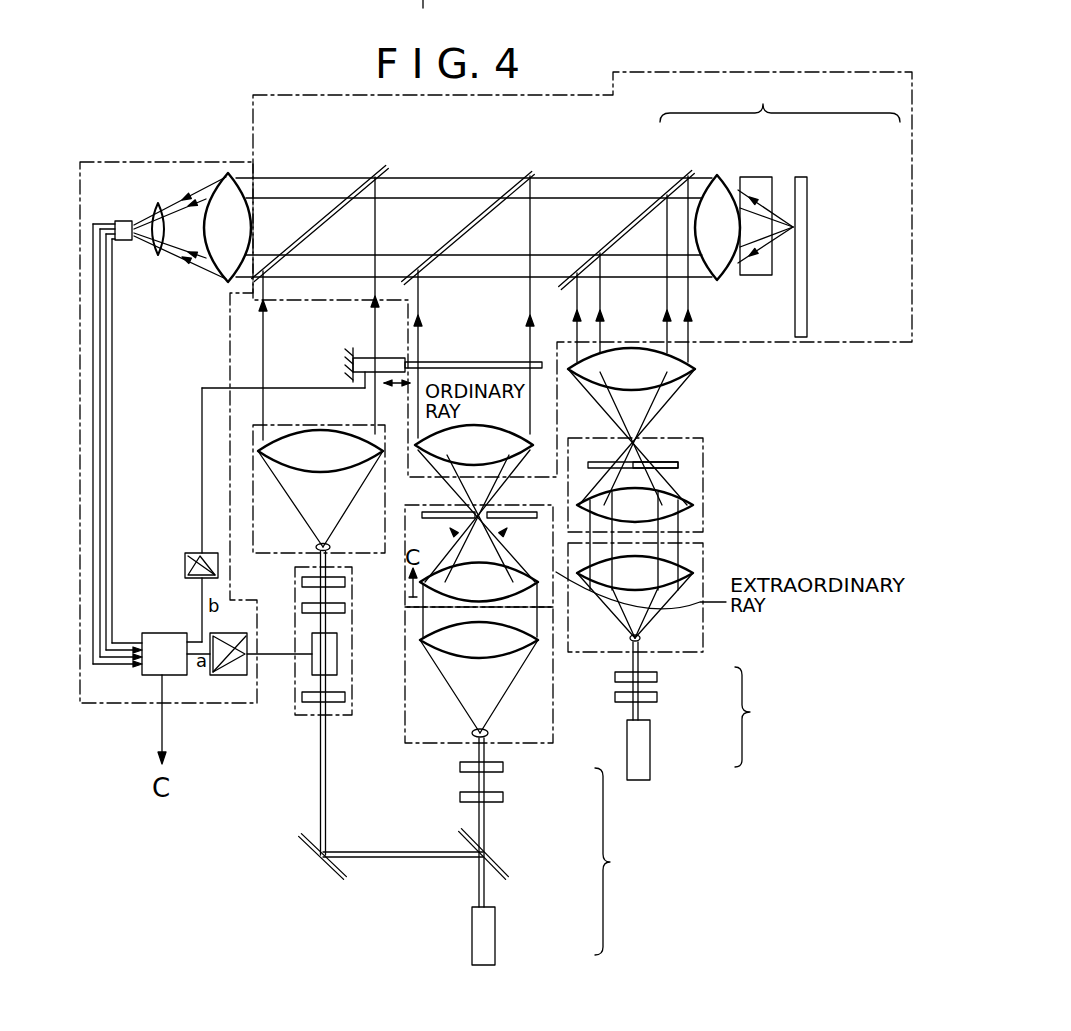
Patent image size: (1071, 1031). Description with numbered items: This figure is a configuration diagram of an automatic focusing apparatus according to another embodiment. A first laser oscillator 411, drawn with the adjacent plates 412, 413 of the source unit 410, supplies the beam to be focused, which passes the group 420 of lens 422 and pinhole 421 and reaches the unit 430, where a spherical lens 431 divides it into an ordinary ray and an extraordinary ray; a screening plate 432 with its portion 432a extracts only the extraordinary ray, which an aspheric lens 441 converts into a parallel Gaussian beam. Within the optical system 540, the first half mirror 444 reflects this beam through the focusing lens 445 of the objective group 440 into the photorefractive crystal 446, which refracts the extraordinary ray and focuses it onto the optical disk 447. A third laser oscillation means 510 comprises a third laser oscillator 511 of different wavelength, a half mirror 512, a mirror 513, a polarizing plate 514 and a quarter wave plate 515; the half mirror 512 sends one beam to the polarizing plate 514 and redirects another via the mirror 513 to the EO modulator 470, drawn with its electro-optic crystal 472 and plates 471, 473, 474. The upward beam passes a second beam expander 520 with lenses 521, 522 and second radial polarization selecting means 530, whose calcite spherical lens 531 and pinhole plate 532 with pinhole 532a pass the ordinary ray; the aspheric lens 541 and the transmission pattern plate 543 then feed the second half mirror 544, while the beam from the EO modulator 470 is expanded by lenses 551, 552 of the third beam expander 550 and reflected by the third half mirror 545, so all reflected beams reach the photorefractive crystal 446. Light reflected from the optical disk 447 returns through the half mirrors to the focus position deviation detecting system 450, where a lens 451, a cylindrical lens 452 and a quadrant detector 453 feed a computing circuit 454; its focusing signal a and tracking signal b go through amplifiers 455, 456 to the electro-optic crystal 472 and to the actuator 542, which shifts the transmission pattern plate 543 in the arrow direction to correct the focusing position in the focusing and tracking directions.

The optical system 540 is at (858, 72).
The focus position deviation detecting system 450 is at (80, 162).
The lens 451 is at (230, 175).
The cylindrical lens 452 is at (156, 203).
The quadrant detector 453 is at (120, 221).
The computing circuit 454 is at (150, 675).
The amplifier 455 is at (236, 675).
The amplifier 456 is at (190, 553).
The third half mirror 545 is at (386, 165).
The second half mirror 544 is at (532, 172).
The objective unit 440 is at (780, 95).
The first half mirror 444 is at (692, 172).
The focusing lens 445 is at (720, 176).
The photorefractive crystal 446 is at (762, 177).
The optical disk 447 is at (805, 177).
The aspheric lens 441 is at (695, 369).
The extraordinary ray unit 430 is at (703, 522).
The spherical lens 431 is at (692, 500).
The screening plate 432 is at (680, 467).
The plate portion 432a is at (672, 458).
The unit 420 is at (703, 648).
The pinhole 421 is at (640, 640).
The lens 422 is at (693, 570).
The light source unit 410 is at (772, 717).
The first laser oscillator 411 is at (650, 750).
The plate 412 is at (657, 697).
The plate 413 is at (657, 677).
The actuator 542 is at (356, 358).
The transmission pattern plate 543 is at (542, 368).
The aspheric lens 541 is at (510, 445).
The second radial polarization selecting means 530 is at (485, 531).
The spherical lens 531 is at (445, 568).
The pinhole plate 532 is at (458, 510).
The pinhole 532a is at (490, 510).
The second beam expander 520 is at (553, 741).
The lens 521 is at (490, 731).
The lens 522 is at (523, 652).
The third beam expander 550 is at (253, 548).
The lens 551 is at (316, 546).
The lens 552 is at (352, 470).
The EO modulator 470 is at (352, 715).
The plate 471 is at (345, 695).
The electro-optic crystal 472 is at (337, 650).
The plate 473 is at (345, 607).
The plate 474 is at (345, 580).
The third laser oscillation means 510 is at (630, 861).
The third laser oscillator 511 is at (495, 930).
The half mirror 512 is at (500, 862).
The mirror 513 is at (338, 878).
The polarizing plate 514 is at (503, 797).
The quarter wave plate 515 is at (503, 767).